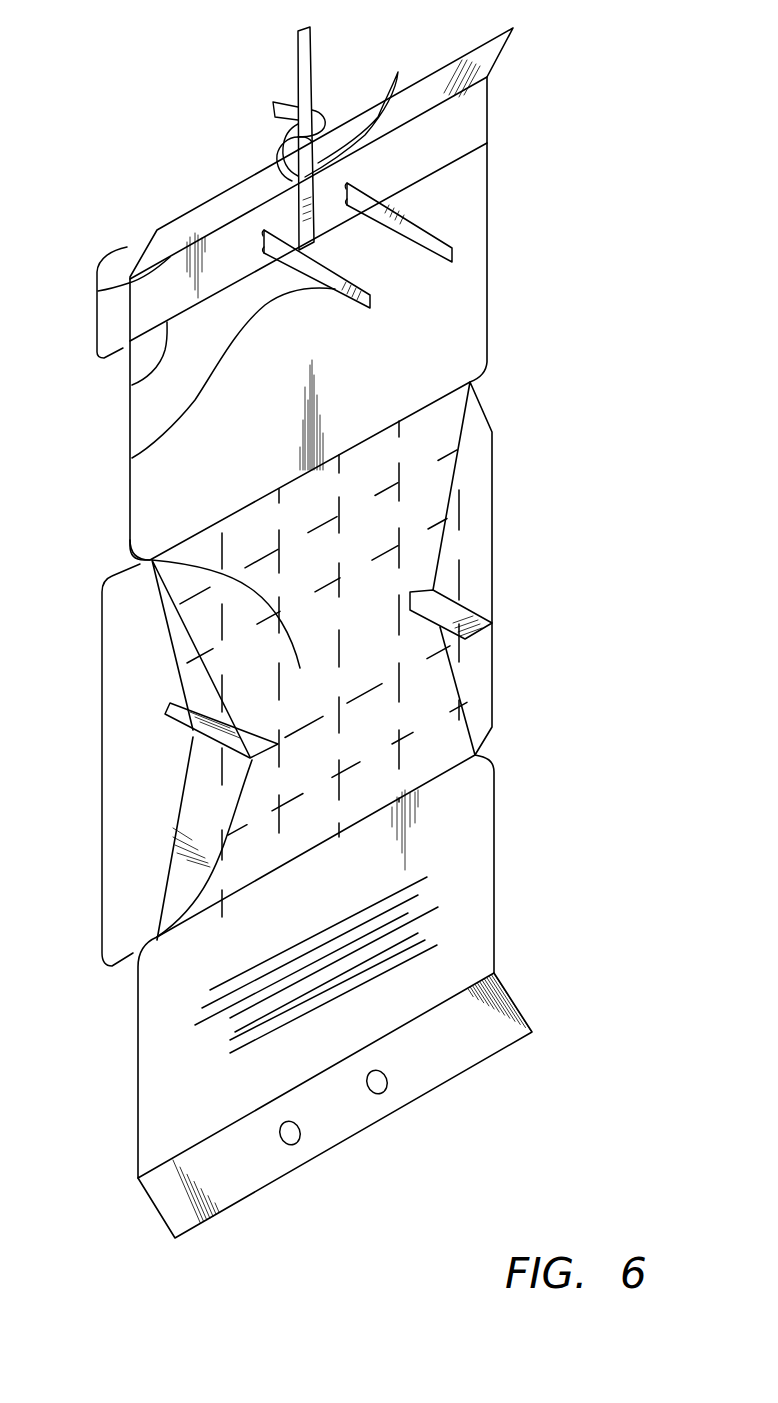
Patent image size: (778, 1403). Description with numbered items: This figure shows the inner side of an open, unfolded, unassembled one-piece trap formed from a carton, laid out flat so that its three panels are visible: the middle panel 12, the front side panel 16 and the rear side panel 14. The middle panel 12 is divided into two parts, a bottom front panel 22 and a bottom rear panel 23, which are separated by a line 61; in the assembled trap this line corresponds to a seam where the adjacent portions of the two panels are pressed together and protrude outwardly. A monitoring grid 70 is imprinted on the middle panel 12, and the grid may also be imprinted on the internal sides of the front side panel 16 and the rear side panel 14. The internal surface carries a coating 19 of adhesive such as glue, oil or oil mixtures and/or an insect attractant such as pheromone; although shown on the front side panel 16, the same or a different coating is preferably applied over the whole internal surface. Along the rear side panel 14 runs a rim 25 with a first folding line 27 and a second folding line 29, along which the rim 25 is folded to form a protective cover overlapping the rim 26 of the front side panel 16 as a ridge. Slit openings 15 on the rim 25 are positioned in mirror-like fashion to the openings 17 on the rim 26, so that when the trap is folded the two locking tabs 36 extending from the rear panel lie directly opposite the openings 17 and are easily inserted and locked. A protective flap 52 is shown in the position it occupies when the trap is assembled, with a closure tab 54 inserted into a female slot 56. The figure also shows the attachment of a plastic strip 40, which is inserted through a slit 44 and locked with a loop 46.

The middle panel 12 is at (102, 775).
The rear side panel 14 is at (488, 294).
The slit openings 15 is at (262, 243).
The front side panel 16 is at (495, 890).
The openings 17 is at (292, 1146).
The adhesive agent coating 19 is at (274, 1038).
The bottom front panel 22 is at (165, 880).
The bottom rear panel 23 is at (163, 617).
The rim 25 is at (97, 325).
The rim 26 is at (518, 1043).
The first folding line 27 is at (132, 385).
The second folding line 29 is at (98, 291).
The locking tabs 36 is at (437, 233).
The plastic strip 40 is at (313, 66).
The slit 44 is at (287, 182).
The loop 46 is at (320, 111).
The protective flap 52 is at (203, 782).
The closure tab 54 is at (166, 713).
The female slot 56 is at (424, 590).
The line 61 is at (135, 549).
The grid 70 is at (400, 479).